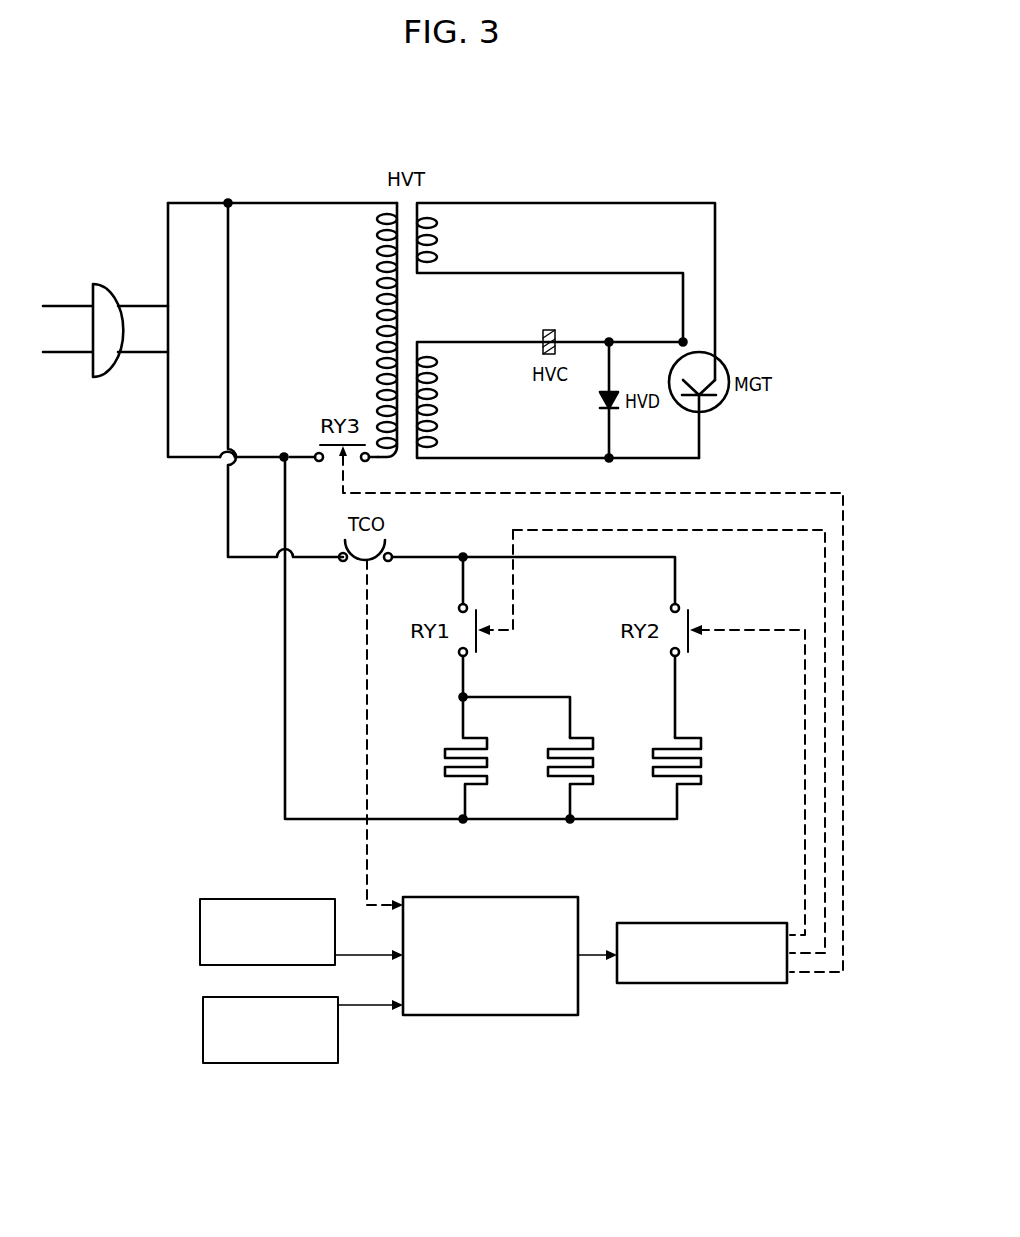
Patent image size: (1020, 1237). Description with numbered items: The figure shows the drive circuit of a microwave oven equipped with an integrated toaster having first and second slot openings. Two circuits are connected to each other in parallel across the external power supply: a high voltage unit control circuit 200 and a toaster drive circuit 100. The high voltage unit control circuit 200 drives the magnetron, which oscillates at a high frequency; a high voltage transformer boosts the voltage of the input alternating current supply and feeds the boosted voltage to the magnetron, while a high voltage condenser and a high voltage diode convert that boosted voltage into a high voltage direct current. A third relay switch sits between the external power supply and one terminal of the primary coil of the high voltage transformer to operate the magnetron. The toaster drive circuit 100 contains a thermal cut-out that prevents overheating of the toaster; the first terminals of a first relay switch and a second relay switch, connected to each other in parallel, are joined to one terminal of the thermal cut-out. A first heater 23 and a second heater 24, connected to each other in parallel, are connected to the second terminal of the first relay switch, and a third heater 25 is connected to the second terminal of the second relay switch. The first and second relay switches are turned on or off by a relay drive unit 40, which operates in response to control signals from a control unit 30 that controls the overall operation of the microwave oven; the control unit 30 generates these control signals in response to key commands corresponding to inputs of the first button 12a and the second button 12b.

The high voltage unit control circuit 200 is at (472, 293).
The toaster drive circuit 100 is at (406, 670).
The first heater 23 is at (447, 778).
The second heater 24 is at (552, 778).
The third heater 25 is at (659, 778).
The first button 12a is at (200, 955).
The second button 12b is at (203, 1005).
The control unit 30 is at (578, 1005).
The relay drive unit 40 is at (760, 985).